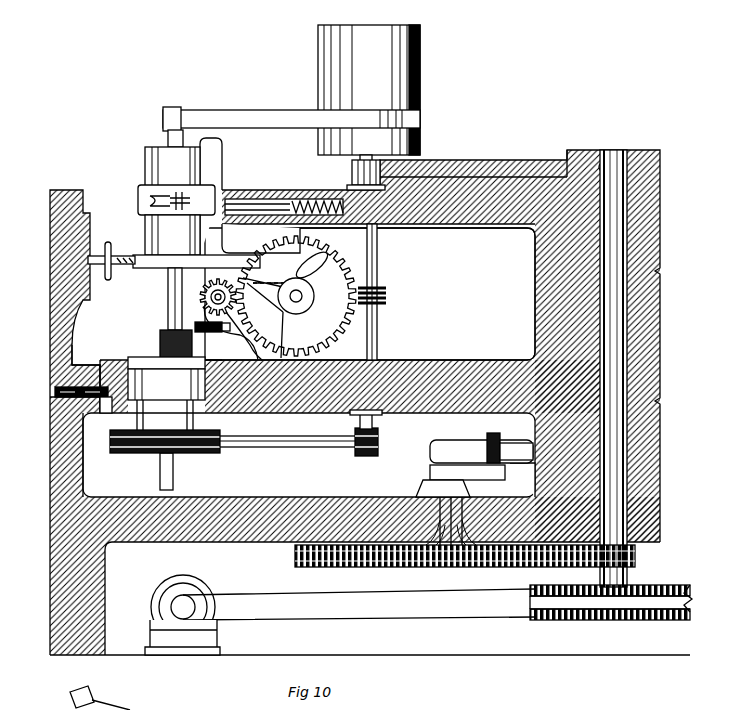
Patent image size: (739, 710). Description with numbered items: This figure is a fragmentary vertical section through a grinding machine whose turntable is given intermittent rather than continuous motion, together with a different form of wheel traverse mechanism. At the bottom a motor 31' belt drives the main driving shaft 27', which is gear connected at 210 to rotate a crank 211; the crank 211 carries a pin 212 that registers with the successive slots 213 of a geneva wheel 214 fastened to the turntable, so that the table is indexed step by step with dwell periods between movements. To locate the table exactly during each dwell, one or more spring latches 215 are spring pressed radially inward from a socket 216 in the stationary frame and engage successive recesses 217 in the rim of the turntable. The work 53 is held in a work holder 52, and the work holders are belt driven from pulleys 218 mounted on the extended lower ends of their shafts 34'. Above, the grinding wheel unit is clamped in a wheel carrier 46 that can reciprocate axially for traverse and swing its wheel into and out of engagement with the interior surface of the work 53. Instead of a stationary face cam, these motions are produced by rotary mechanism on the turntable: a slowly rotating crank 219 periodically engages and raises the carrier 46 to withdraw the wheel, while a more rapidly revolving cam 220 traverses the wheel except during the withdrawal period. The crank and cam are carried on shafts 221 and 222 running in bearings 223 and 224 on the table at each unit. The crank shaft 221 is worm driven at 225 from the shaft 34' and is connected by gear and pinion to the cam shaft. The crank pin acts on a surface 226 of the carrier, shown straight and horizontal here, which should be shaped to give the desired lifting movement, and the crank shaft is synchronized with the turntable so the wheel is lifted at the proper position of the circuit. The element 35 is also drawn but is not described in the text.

The wheel carrier 46 is at (214, 236).
The cam 220 is at (208, 290).
The crank 219 is at (292, 310).
The surface of the carrier 226 is at (322, 258).
The bearing 223 is at (300, 284).
The crank shaft 221 is at (314, 297).
The worm drive 225 is at (380, 288).
The cam shaft 222 is at (210, 318).
The arm 35 is at (236, 344).
The bearing 224 is at (168, 337).
The work 53 is at (158, 358).
The work holder 52 is at (147, 404).
The pulley 218 is at (366, 456).
The shaft 34' is at (377, 422).
The geneva wheel 214 is at (462, 446).
The pin 212 is at (494, 434).
The slot 213 is at (514, 447).
The crank 211 is at (456, 466).
The main driving shaft 27' is at (644, 368).
The gear connection 210 is at (548, 568).
The motor 31' is at (331, 612).
The spring latch 215 is at (55, 392).
The socket 216 is at (72, 412).
The recess 217 is at (106, 413).